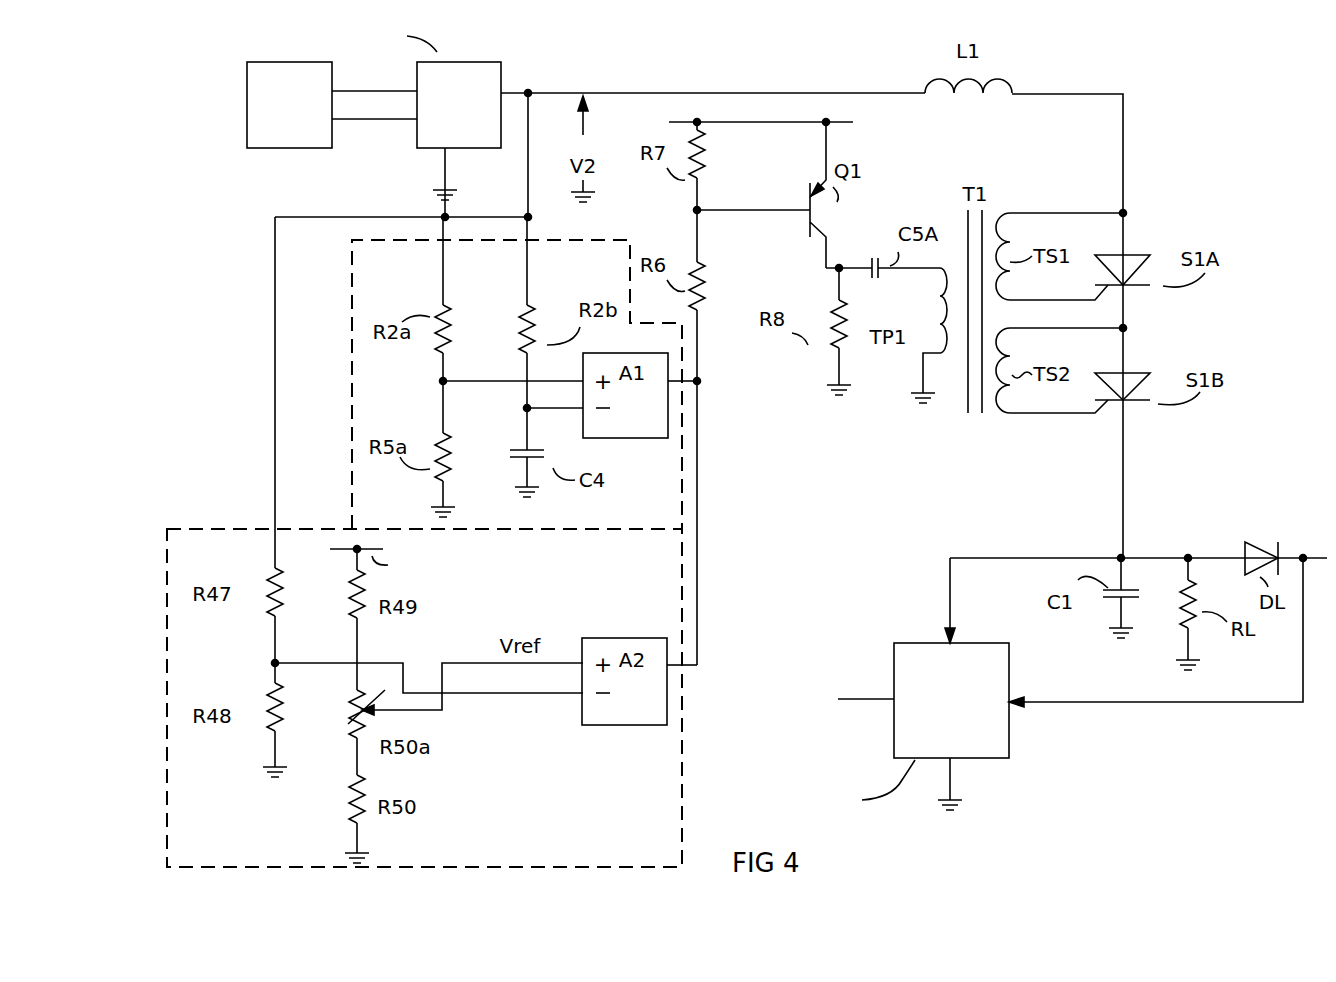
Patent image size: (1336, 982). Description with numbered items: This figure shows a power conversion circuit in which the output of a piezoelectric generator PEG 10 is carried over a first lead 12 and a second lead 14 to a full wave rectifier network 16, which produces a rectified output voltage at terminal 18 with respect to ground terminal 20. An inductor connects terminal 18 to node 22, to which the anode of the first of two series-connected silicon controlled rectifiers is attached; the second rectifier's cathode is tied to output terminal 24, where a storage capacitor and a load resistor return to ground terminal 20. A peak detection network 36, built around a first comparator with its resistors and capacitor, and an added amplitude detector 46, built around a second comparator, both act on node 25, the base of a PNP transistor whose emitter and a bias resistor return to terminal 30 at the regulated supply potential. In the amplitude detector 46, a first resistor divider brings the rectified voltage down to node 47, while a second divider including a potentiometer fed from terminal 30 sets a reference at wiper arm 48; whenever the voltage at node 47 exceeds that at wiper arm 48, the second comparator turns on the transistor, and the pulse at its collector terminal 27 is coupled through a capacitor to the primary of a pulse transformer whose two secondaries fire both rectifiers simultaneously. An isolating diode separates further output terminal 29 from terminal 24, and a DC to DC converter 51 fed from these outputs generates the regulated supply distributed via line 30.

The PEG 10 is at (306, 59).
The generator output lead 12 is at (407, 88).
The generator output lead 14 is at (398, 123).
The full wave rectifier network 16 is at (490, 61).
The terminal 18 is at (617, 88).
The ground terminal 20 is at (459, 166).
The node 22 is at (1068, 95).
The output terminal 24 is at (1123, 557).
The node 25 is at (690, 210).
The terminal 27 is at (828, 274).
The further output terminal 29 is at (1302, 552).
The terminal 30 is at (747, 132).
The peak detection network 36 is at (787, 483).
The amplitude detector circuit 46 is at (800, 560).
The node 47 is at (266, 668).
The wiper arm 48 is at (438, 711).
The DC to DC converter 51 is at (1018, 720).